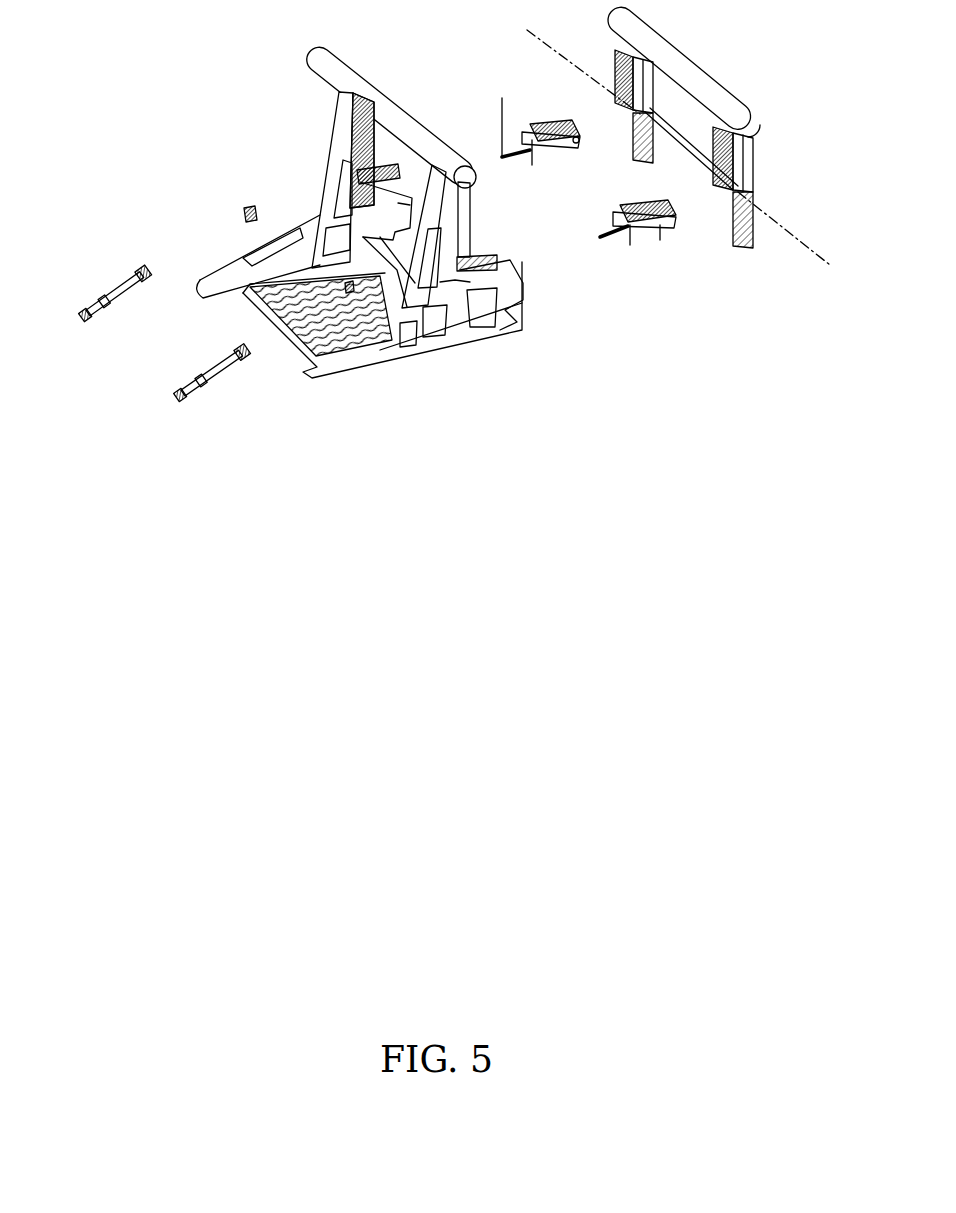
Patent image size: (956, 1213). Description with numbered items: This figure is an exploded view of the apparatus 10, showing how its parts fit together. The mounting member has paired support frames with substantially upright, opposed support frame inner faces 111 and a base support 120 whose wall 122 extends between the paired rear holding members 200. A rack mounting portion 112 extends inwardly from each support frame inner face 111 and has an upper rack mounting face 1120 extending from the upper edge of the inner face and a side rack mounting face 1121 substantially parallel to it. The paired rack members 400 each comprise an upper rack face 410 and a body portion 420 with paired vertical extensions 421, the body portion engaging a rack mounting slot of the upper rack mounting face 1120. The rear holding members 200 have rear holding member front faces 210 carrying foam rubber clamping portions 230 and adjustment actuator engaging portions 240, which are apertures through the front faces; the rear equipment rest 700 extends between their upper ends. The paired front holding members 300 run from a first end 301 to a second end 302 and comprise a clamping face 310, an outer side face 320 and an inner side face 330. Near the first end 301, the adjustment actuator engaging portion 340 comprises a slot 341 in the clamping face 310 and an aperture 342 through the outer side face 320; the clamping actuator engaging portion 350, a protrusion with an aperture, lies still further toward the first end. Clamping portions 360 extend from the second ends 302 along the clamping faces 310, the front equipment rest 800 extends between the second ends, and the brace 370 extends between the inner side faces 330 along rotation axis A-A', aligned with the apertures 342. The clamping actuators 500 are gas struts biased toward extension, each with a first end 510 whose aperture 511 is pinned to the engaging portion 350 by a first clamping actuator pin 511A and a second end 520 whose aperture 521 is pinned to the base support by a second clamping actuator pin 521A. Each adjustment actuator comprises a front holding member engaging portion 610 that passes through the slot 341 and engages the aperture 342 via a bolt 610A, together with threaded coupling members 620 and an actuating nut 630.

The apparatus 10 is at (248, 56).
The rear equipment rest 700 is at (356, 78).
The rear holding member 200 is at (320, 160).
The rear holding member clamping portion 230 is at (365, 172).
The rear holding member front face 210 is at (471, 213).
The upper rack mounting face 1120 is at (388, 190).
The rack mounting portion 112 is at (430, 172).
The side rack mounting face 1121 is at (452, 180).
The support frame inner face 111 is at (230, 270).
The base support 120 is at (323, 313).
The wall 122 is at (397, 273).
The rear holding member adjustment actuator engaging portion 240 is at (452, 273).
The actuating nut 630 is at (250, 207).
The bolt 610A is at (527, 282).
The clamping actuator 500 is at (128, 322).
The extendable strut first end 510 is at (148, 266).
The first clamping actuator pin 511A is at (158, 270).
The aperture 511 is at (151, 278).
The extendable strut second end 520 is at (87, 305).
The second clamping actuator pin 521A is at (80, 315).
The aperture 521 is at (89, 318).
The rotation axis A-A' A is at (679, 144).
The front equipment rest 800 is at (680, 52).
The front holding member 300 is at (600, 40).
The front holding member clamping portion 360 is at (612, 51).
The front holding member clamping face 310 is at (653, 116).
The front holding member brace 370 is at (700, 172).
The front holding member inner side face 330 is at (653, 117).
The front holding member adjustment actuator engaging portion 340 is at (636, 136).
The front holding member clamping actuator engaging portion 350 is at (636, 152).
The adjustment actuator engaging slot 341 is at (734, 228).
The adjustment actuator engaging aperture 342 is at (755, 205).
The second end 302 is at (758, 138).
The front holding member outer side face 320 is at (748, 172).
The first end 301 is at (748, 256).
The rack member 400 is at (548, 117).
The upper rack face 410 is at (530, 126).
The coupling member 620 is at (510, 122).
The rack member body portion 420 is at (628, 262).
The vertical extension 421 is at (620, 244).
The adjustment actuator front holding member engaging portion 610 is at (577, 145).